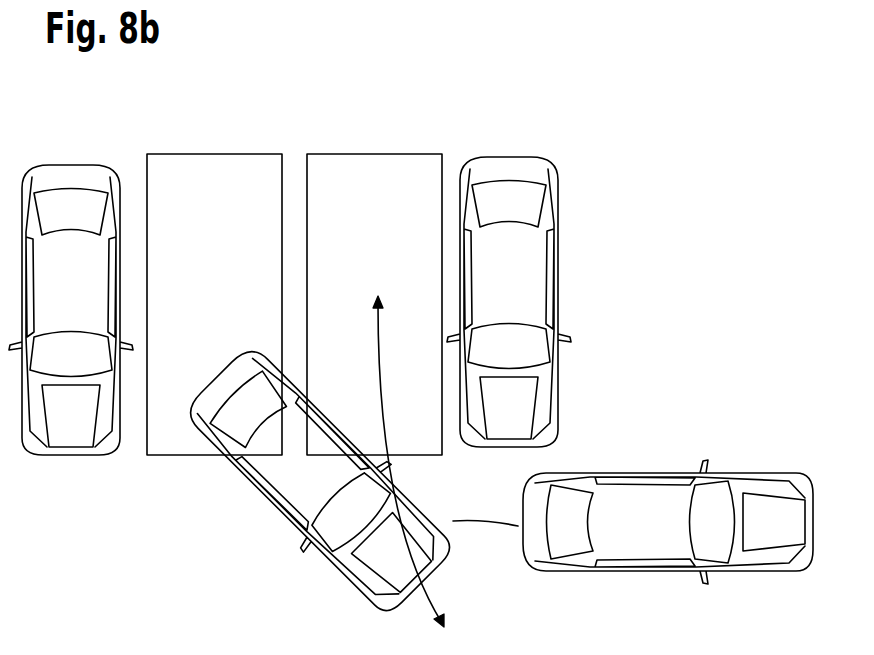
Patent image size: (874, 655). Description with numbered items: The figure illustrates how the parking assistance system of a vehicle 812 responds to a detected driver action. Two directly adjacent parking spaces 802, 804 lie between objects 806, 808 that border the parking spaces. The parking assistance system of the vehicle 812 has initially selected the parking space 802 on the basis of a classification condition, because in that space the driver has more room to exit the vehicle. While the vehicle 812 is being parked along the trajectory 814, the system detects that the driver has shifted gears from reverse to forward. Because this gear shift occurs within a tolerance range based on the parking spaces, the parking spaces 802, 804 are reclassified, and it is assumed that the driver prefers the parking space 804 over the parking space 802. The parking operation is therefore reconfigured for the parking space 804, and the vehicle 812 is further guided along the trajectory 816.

The parking space 802 is at (208, 154).
The parking space 804 is at (372, 154).
The object 806 is at (68, 162).
The object 808 is at (506, 157).
The vehicle 812 is at (744, 472).
The trajectory 814 is at (484, 519).
The trajectory 816 is at (446, 594).